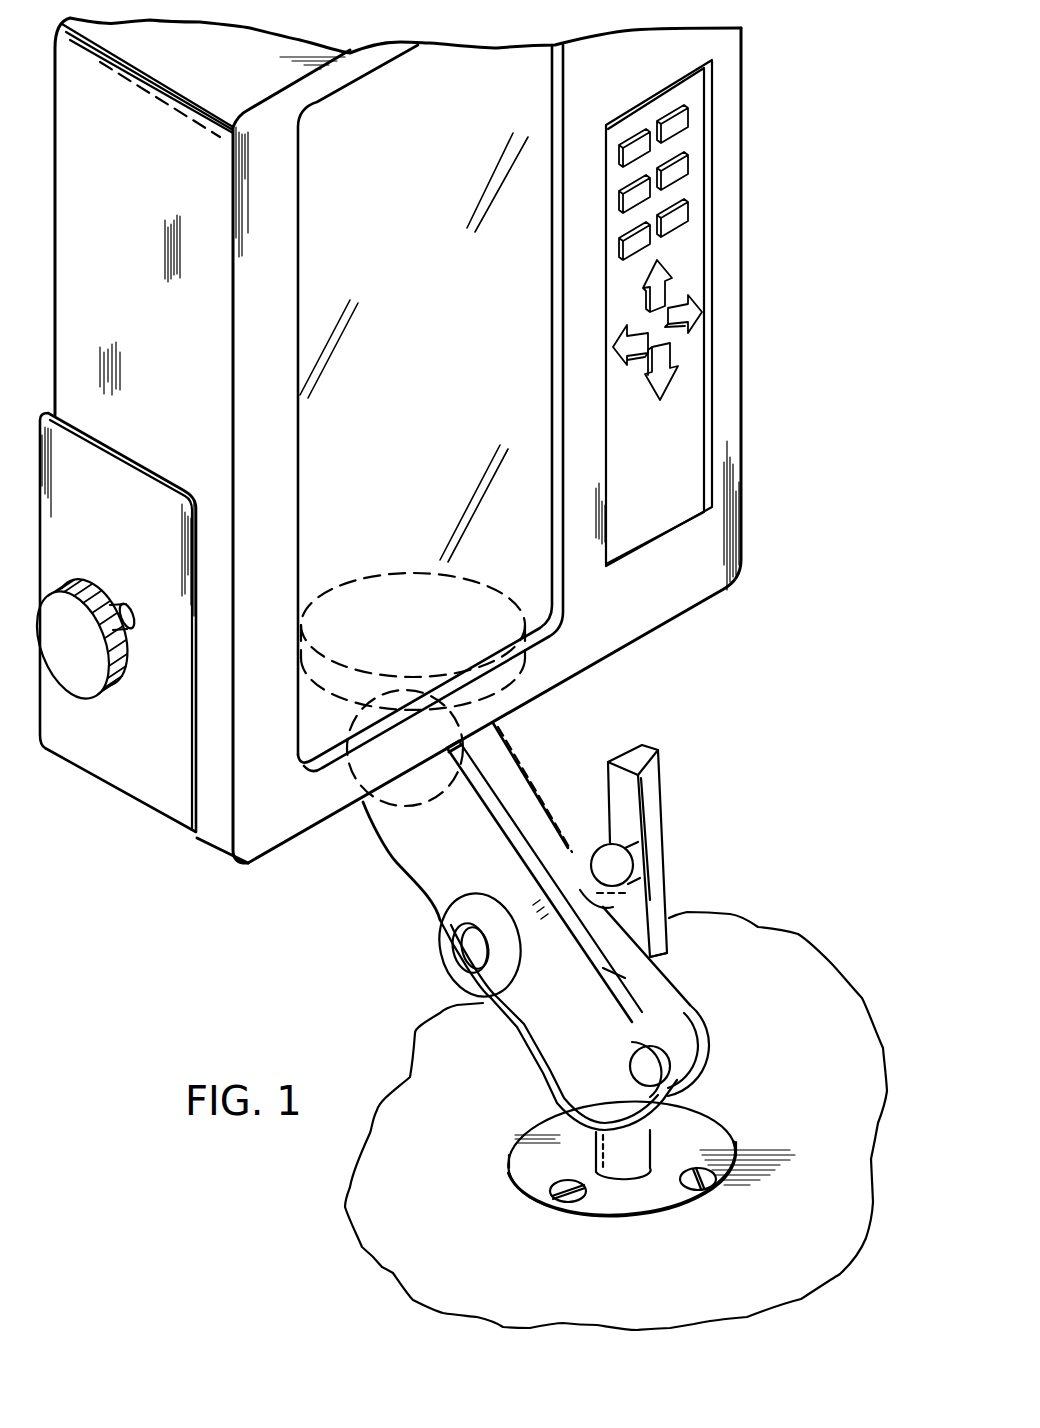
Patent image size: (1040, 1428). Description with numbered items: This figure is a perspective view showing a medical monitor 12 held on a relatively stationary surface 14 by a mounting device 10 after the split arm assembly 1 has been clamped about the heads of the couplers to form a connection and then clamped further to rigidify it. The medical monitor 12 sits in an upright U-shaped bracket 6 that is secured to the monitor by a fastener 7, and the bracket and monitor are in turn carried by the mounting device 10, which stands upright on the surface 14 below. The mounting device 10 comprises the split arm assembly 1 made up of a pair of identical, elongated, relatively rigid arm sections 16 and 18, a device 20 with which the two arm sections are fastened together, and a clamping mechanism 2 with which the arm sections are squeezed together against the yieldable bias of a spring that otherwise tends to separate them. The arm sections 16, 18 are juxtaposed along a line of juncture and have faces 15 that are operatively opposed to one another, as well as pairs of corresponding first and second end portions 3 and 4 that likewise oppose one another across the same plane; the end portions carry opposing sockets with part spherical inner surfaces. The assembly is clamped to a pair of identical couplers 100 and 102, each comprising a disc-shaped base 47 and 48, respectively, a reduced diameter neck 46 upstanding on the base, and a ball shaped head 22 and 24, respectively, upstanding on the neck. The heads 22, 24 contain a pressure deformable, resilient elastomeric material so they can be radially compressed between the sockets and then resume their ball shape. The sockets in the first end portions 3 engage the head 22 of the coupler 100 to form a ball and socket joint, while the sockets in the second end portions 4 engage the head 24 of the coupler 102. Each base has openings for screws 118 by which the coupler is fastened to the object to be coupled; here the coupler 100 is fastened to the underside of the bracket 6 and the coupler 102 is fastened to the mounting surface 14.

The split arm assembly 1 is at (527, 926).
The clamping mechanism 2 is at (677, 798).
The first end portions 3 is at (517, 770).
The second end portions 4 is at (660, 570).
The U-shaped bracket 6 is at (158, 707).
The fastener 7 is at (72, 608).
The mounting device 10 is at (527, 926).
The medical monitor 12 is at (441, 338).
The stationary surface 14 is at (448, 1182).
The faces 15 is at (617, 975).
The arm section 16 is at (446, 836).
The arm section 18 is at (522, 807).
The fastening device 20 is at (678, 857).
The head 22 is at (480, 710).
The head 24 is at (677, 1075).
The neck 46 is at (648, 1145).
The disc-shaped base 47 is at (388, 590).
The disc-shaped base 48 is at (652, 1217).
The coupler 100 is at (465, 615).
The coupler 102 is at (625, 1191).
The screws 118 is at (710, 1185).